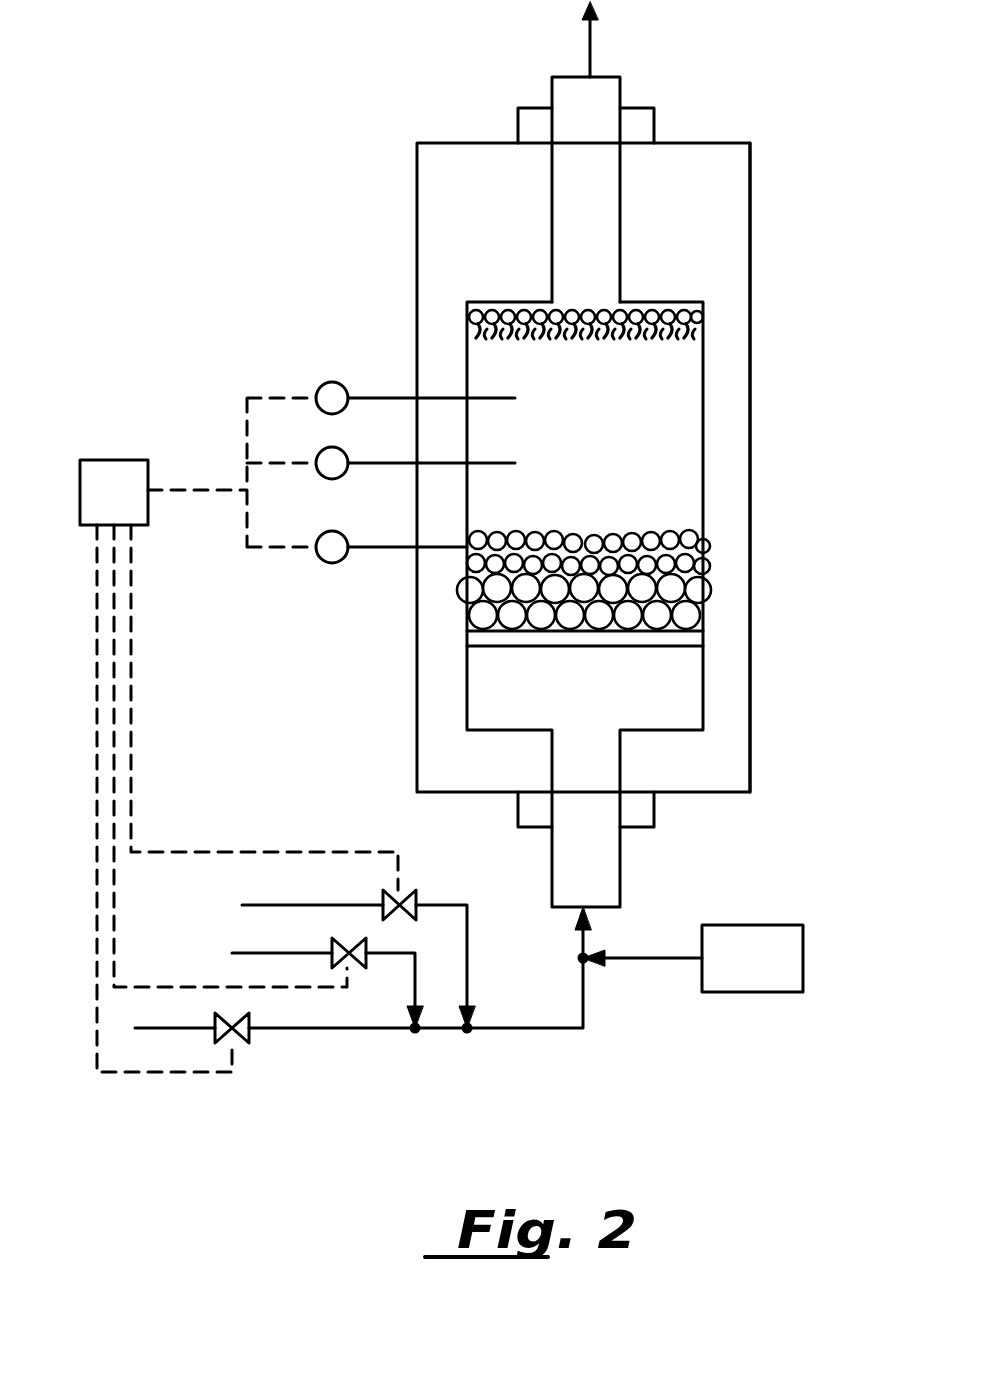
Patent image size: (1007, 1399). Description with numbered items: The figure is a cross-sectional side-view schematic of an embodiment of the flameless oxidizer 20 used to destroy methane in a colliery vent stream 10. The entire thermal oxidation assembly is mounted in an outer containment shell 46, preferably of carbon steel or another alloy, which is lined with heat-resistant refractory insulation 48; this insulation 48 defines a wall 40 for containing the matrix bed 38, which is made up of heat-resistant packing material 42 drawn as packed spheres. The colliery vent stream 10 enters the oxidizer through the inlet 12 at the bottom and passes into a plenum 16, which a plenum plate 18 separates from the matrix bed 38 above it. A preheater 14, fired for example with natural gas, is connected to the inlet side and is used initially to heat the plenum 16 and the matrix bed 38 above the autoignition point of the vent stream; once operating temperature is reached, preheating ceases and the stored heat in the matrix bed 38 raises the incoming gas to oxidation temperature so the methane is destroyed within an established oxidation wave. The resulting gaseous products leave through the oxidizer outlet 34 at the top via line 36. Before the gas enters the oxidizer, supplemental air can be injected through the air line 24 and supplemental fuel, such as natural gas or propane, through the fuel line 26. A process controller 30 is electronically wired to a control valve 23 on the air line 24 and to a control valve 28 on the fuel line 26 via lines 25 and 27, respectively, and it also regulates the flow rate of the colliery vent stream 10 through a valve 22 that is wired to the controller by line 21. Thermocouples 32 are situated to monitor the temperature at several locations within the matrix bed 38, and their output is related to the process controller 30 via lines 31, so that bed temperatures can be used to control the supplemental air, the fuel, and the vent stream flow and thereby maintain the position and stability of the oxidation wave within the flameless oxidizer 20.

The colliery vent stream 10 is at (375, 1030).
The inlet 12 is at (654, 810).
The preheater 14 is at (790, 955).
The plenum 16 is at (600, 707).
The plenum plate 18 is at (690, 640).
The flameless oxidizer 20 is at (780, 222).
The line 21 is at (145, 1075).
The valve 22 is at (252, 1033).
The control valve 23 is at (408, 893).
The air line 24 is at (468, 950).
The line 25 is at (270, 852).
The fuel line 26 is at (246, 950).
The line 27 is at (116, 905).
The control valve 28 is at (330, 945).
The process controller 30 is at (105, 478).
The lines 31 is at (216, 490).
The thermocouples 32 is at (344, 386).
The oxidizer outlet 34 is at (655, 125).
The line 36 is at (592, 40).
The matrix bed 38 is at (610, 468).
The wall 40 is at (703, 443).
The packing material 42 is at (700, 315).
The outer containment shell 46 is at (751, 527).
The insulation 48 is at (735, 712).